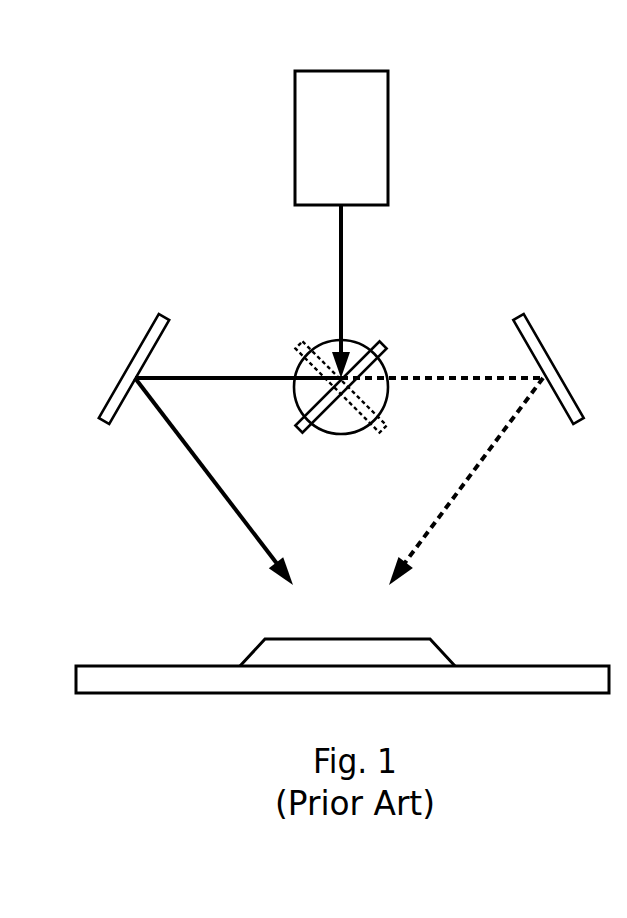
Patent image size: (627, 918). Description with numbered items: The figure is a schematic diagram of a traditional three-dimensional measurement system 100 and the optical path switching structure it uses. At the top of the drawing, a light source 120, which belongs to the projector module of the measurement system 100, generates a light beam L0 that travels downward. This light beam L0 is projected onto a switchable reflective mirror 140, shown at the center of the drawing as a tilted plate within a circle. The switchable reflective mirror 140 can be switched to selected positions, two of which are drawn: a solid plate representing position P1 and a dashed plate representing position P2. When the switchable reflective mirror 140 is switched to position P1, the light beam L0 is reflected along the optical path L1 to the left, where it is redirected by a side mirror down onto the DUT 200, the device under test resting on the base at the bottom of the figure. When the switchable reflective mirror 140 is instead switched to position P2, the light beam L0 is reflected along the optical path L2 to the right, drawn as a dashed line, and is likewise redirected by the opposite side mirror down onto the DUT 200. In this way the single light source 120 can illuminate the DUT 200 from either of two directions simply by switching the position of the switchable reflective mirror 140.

The traditional three-dimensional measurement system 100 is at (127, 118).
The light source 120 is at (388, 133).
The switchable reflective mirror 140 is at (323, 350).
The DUT (device under test) 200 is at (432, 645).
The light beam L0 is at (343, 270).
The optical path L1 is at (201, 375).
The optical path L2 is at (474, 375).
The position P1 is at (388, 343).
The position P2 is at (386, 433).